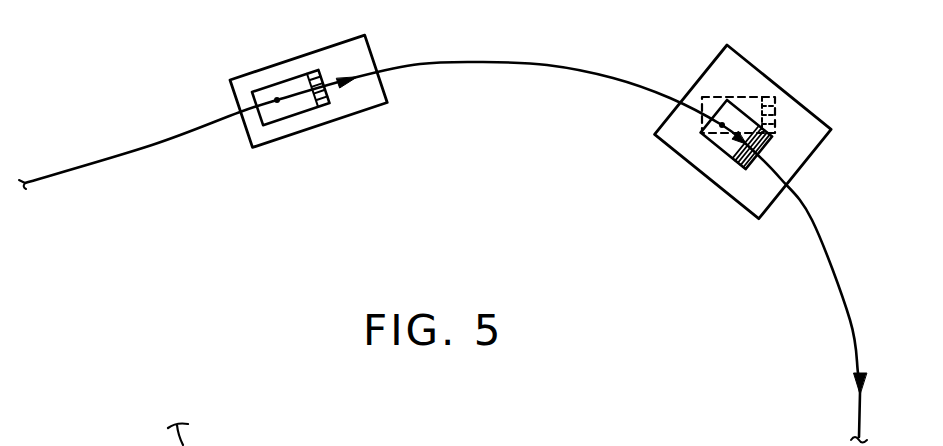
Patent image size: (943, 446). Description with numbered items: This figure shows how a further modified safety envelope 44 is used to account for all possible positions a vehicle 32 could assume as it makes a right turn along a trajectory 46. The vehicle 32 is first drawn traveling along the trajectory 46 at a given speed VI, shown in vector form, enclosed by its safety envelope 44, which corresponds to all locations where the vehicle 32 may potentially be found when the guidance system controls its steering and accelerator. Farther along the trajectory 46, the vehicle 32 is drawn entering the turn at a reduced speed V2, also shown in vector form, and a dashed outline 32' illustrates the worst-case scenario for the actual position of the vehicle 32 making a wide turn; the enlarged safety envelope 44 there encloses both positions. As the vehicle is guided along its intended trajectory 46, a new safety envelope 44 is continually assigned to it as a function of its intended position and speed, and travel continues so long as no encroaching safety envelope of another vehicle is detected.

The vehicle 32 is at (512, 185).
The worst-case vehicle position 32' is at (775, 87).
The safety envelope 44 is at (387, 99).
The trajectory 46 is at (153, 148).
The speed V1 VI is at (341, 80).
The reduced speed V2 is at (740, 143).